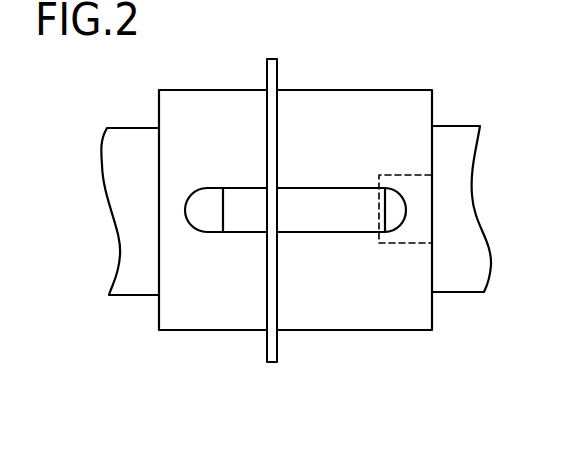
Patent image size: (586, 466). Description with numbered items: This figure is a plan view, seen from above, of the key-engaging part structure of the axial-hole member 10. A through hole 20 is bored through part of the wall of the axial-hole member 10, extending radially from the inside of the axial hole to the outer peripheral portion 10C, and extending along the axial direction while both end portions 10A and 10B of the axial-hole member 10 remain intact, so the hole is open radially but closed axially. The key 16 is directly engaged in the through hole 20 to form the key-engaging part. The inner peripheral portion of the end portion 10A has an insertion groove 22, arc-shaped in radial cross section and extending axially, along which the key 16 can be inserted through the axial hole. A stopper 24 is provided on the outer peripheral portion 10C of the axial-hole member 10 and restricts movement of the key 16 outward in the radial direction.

The axial-hole member 10 is at (298, 345).
The end portion 10A is at (432, 110).
The end portion 10B is at (159, 106).
The outer peripheral portion 10C is at (312, 90).
The key 16 is at (305, 202).
The through hole 20 is at (247, 232).
The insertion groove 22 is at (413, 241).
The stopper 24 is at (266, 60).